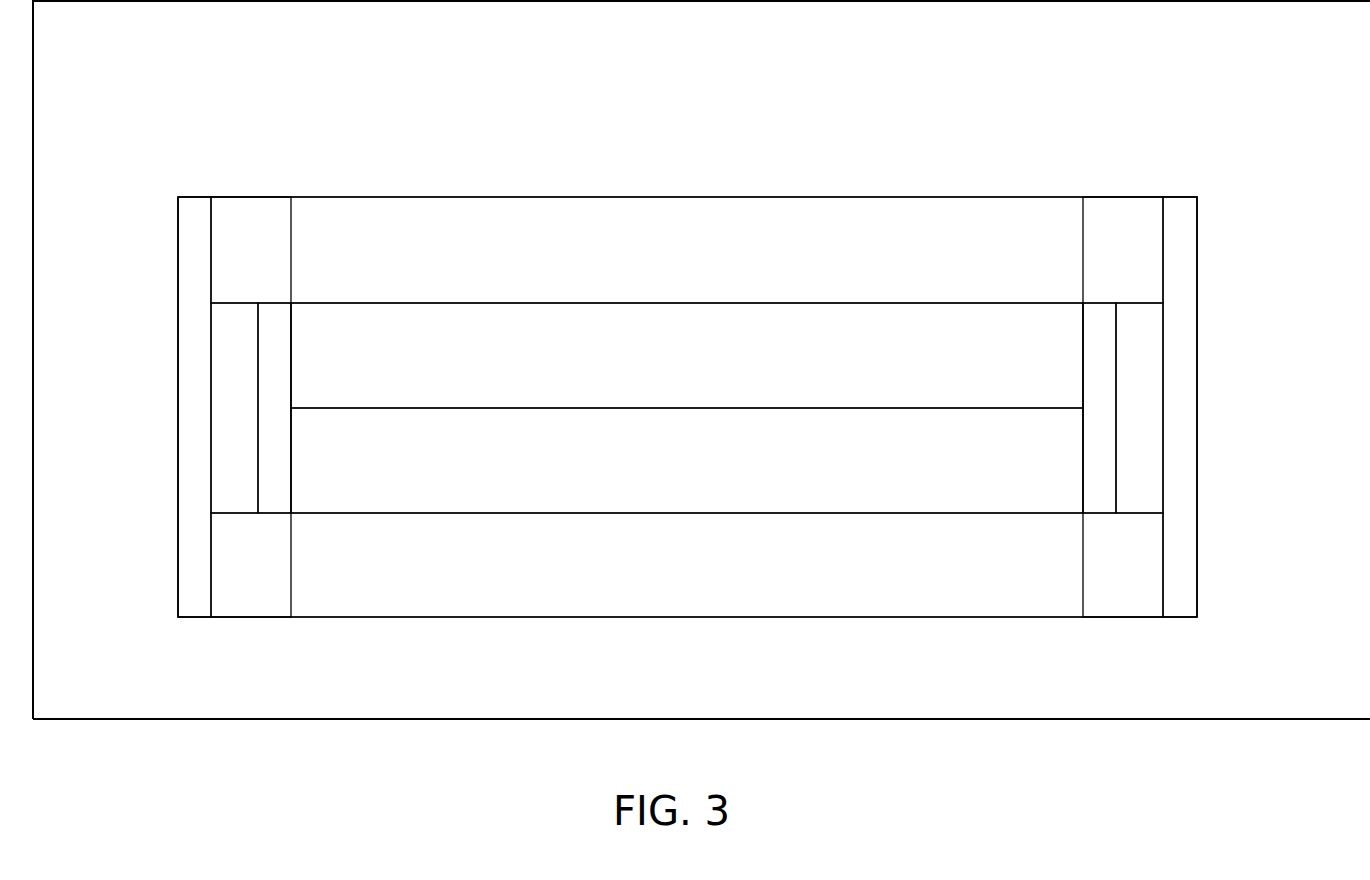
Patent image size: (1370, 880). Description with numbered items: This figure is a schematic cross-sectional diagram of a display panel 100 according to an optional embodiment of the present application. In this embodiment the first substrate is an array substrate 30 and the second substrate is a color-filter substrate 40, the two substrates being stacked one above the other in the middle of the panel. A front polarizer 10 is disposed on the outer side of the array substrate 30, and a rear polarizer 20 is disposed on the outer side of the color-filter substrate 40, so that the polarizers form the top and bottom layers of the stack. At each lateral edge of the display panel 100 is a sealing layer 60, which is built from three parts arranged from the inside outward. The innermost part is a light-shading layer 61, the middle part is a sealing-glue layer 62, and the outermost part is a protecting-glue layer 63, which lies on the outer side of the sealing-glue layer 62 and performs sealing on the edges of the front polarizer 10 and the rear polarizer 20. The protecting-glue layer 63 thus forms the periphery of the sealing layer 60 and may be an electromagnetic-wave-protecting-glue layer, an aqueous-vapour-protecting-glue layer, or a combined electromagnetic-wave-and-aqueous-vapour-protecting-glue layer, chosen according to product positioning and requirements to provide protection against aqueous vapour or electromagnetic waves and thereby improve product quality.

The display panel 100 is at (421, 83).
The front polarizer 10 is at (862, 272).
The rear polarizer 20 is at (855, 587).
The array substrate 30 is at (864, 377).
The color-filter substrate 40 is at (917, 483).
The sealing layer 60 is at (132, 378).
The light-shading layer 61 is at (275, 318).
The sealing-glue layer 62 is at (240, 498).
The protecting-glue layer 63 is at (190, 461).